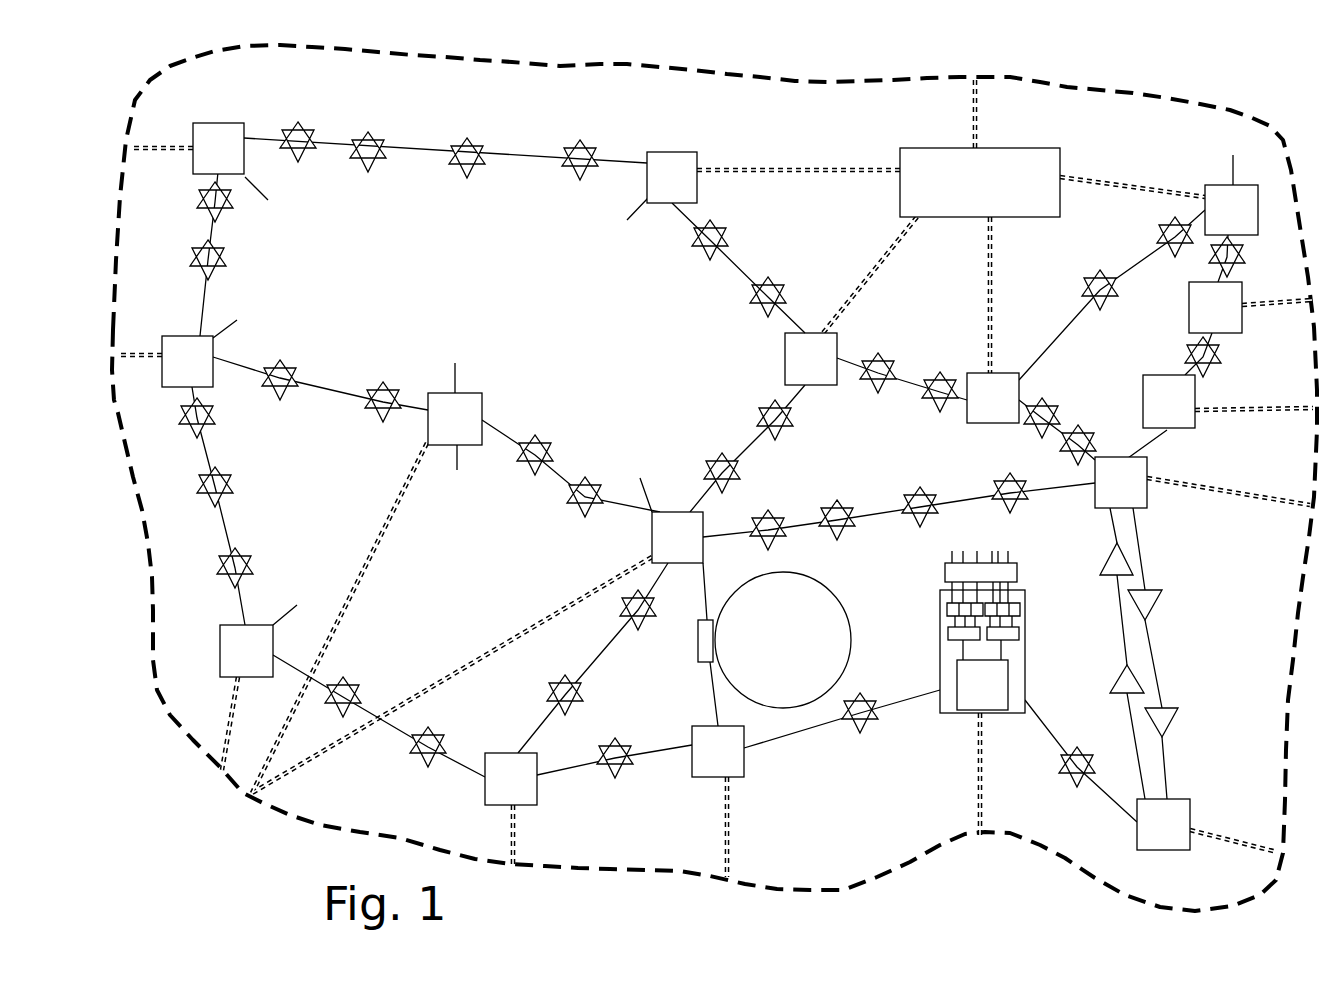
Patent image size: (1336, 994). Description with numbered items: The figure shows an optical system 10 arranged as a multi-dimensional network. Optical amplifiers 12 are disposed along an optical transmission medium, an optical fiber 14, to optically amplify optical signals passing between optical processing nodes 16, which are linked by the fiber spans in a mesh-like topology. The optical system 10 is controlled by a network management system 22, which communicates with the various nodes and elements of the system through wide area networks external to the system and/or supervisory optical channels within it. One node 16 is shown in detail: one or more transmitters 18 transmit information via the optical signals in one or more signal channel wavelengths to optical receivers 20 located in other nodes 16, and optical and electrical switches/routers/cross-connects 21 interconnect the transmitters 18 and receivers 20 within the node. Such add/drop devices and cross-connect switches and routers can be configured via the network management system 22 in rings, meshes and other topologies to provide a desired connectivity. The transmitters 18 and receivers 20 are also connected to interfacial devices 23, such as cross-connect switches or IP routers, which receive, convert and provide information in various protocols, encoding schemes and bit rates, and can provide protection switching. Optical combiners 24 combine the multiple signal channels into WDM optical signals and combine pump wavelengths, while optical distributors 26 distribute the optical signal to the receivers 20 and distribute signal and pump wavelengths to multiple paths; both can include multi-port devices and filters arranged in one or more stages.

The optical system 10 is at (260, 846).
The optical amplifier 12 is at (780, 290).
The optical fiber 14 is at (740, 267).
The optical processing node 16 is at (1065, 712).
The transmitter 18 is at (947, 607).
The optical receiver 20 is at (1020, 612).
The optical and electrical switches/routers/cross-connects 21 is at (697, 650).
The network management system 22 is at (1062, 167).
The interfacial device 23 is at (1017, 566).
The optical combiner 24 is at (947, 633).
The optical distributor 26 is at (1020, 635).